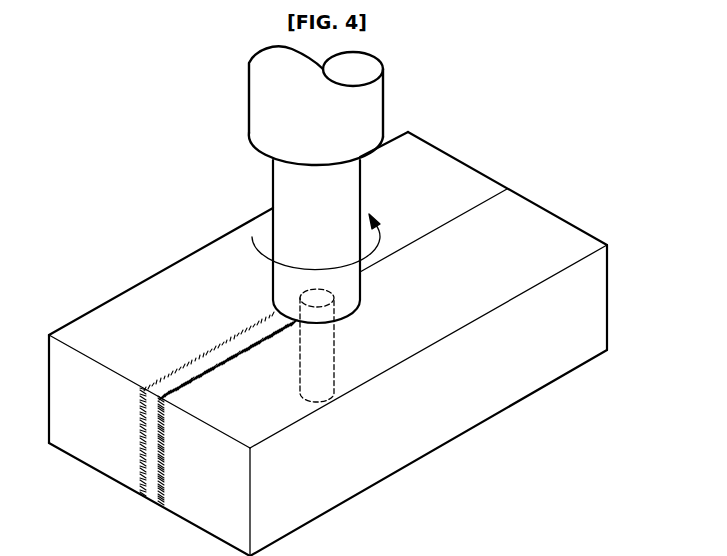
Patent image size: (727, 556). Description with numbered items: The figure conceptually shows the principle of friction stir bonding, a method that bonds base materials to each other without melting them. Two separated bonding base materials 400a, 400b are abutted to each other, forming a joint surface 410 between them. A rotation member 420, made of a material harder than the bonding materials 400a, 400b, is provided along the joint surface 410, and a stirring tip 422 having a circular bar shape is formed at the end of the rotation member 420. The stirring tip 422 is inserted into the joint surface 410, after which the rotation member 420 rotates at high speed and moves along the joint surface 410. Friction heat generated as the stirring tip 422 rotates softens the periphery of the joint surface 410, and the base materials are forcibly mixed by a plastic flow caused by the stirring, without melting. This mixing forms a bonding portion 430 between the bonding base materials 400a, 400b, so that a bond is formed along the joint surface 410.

The bonding base material 400a is at (102, 318).
The bonding base material 400b is at (538, 237).
The joint surface 410 is at (475, 207).
The rotation member 420 is at (249, 110).
The stirring tip 422 is at (335, 367).
The bonding portion 430 is at (207, 360).